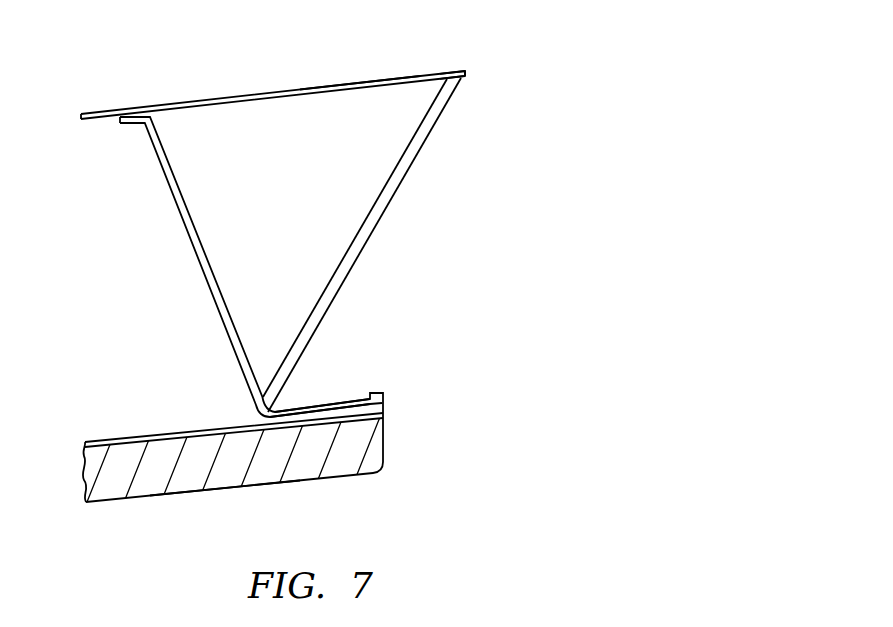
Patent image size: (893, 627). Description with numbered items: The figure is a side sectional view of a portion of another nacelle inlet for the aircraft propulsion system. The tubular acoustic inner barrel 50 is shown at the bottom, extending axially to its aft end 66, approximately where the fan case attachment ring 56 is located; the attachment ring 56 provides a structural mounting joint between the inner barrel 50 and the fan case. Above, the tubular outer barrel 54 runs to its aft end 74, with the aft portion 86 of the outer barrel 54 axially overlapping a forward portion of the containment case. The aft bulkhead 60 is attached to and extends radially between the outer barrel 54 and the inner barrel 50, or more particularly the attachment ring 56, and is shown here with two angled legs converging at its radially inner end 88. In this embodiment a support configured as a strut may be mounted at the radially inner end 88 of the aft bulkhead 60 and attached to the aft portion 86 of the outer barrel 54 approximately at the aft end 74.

The inner barrel 50 is at (206, 492).
The outer barrel 54 is at (89, 110).
The fan case attachment ring 56 is at (385, 392).
The aft bulkhead 60 is at (198, 257).
The aft end of inner barrel 66 is at (385, 447).
The aft end of outer barrel 74 is at (469, 72).
The aft portion of outer barrel 86 is at (399, 70).
The radially inner end of aft bulkhead 88 is at (257, 407).